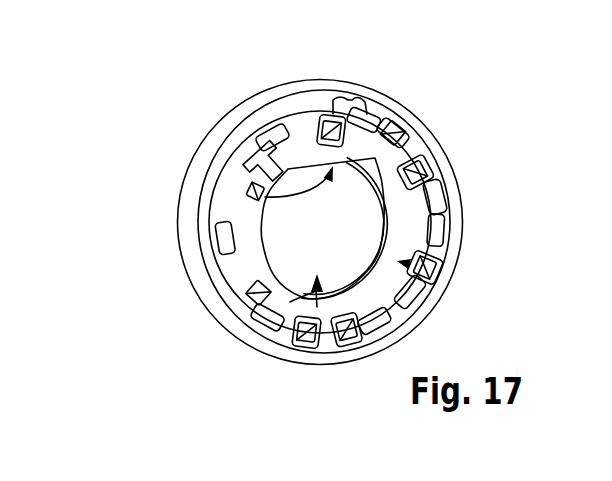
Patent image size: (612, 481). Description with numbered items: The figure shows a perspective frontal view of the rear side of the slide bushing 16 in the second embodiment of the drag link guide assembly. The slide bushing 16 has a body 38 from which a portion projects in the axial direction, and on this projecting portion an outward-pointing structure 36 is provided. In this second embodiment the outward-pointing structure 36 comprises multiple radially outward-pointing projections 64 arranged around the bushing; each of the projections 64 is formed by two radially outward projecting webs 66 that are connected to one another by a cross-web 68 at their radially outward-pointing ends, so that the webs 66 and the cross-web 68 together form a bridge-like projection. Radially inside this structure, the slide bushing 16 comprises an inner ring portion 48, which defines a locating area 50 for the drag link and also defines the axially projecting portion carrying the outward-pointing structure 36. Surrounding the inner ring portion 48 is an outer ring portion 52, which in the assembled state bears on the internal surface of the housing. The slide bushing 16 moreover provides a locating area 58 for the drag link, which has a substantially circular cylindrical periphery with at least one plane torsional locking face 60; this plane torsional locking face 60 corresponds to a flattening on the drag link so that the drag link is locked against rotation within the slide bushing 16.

The slide bushing 16 is at (178, 104).
The outward-pointing structure 36 is at (348, 93).
The body 38 is at (273, 98).
The inner ring portion 48 is at (411, 223).
The locating area 50 is at (409, 264).
The outer ring portion 52 is at (206, 163).
The locating area 58 is at (290, 302).
The plane torsional locking face 60 is at (265, 197).
The radially outward-pointing projections 64 is at (418, 152).
The radially outward projecting webs 66 is at (393, 138).
The cross-web 68 is at (433, 175).